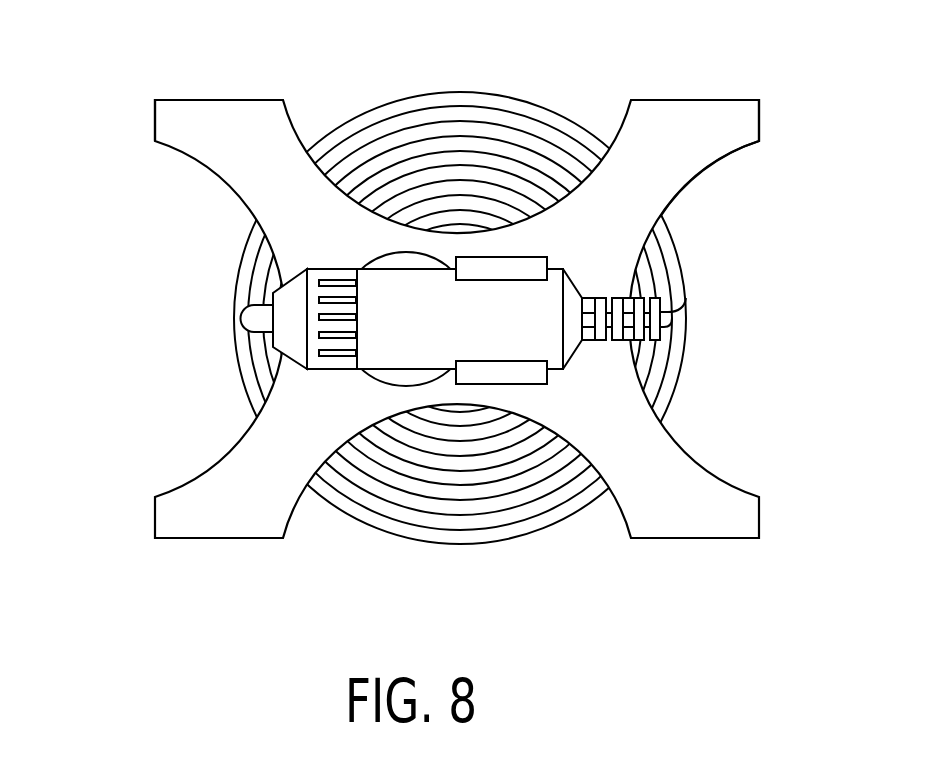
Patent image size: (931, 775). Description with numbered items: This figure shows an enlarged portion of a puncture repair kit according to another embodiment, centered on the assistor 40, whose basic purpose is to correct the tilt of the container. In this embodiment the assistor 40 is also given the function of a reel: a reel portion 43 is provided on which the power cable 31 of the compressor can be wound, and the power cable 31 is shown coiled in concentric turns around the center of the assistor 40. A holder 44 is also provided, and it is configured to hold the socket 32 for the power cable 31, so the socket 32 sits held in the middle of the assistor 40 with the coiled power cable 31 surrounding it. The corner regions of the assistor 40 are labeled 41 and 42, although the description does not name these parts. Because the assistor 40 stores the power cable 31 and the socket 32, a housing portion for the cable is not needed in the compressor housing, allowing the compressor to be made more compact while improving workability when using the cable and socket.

The power cable 31 is at (408, 105).
The socket 32 is at (407, 330).
The assistor 40 is at (696, 113).
The arm 41 is at (155, 118).
The arm 42 is at (680, 192).
The reel portion 43 is at (475, 232).
The holder 44 is at (502, 370).